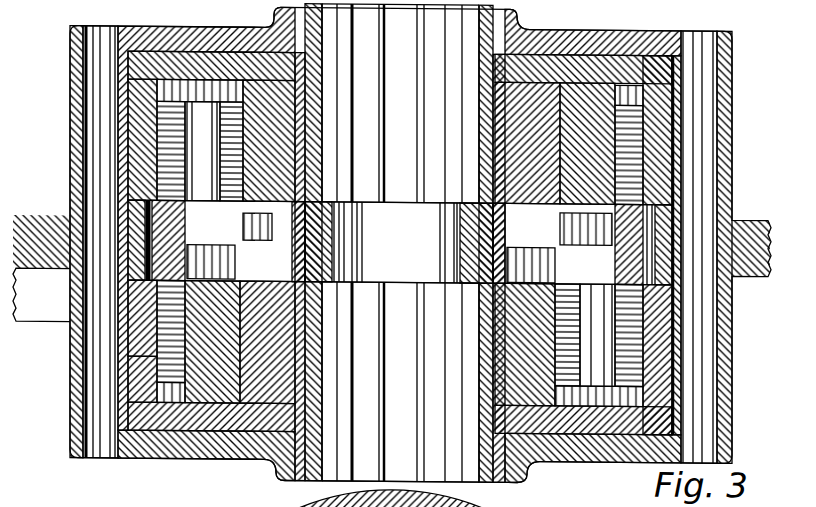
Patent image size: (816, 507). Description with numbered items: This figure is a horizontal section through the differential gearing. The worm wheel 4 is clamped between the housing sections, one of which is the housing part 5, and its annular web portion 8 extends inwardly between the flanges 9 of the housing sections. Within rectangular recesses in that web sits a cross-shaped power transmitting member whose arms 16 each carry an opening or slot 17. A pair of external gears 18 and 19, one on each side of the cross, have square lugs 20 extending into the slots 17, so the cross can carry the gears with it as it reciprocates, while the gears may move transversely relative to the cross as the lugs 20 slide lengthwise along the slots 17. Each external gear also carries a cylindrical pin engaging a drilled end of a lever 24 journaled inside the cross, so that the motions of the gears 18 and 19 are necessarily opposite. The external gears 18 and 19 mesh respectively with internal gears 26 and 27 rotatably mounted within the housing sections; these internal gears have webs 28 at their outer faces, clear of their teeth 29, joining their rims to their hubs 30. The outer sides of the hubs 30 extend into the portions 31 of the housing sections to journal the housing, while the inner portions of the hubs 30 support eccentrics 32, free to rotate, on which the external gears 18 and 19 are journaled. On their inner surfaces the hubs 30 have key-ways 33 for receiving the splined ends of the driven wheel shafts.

The worm wheel 4 is at (42, 128).
The housing part 5 is at (0, 197).
The annular web portion 8 is at (644, 217).
The flanges 9 is at (647, 31).
The arms 16 is at (684, 199).
The opening or slot 17 is at (150, 271).
The external gear 18 is at (577, 92).
The external gear 19 is at (530, 457).
The square lugs 20 is at (246, 220).
The lever 24 is at (246, 241).
The internal gear 26 is at (661, 84).
The internal gear 27 is at (654, 358).
The webs 28 is at (232, 58).
The teeth 29 is at (167, 153).
The hubs 30 is at (477, 178).
The portions 31 is at (283, 453).
The eccentrics 32 is at (585, 24).
The key-ways 33 is at (362, 452).